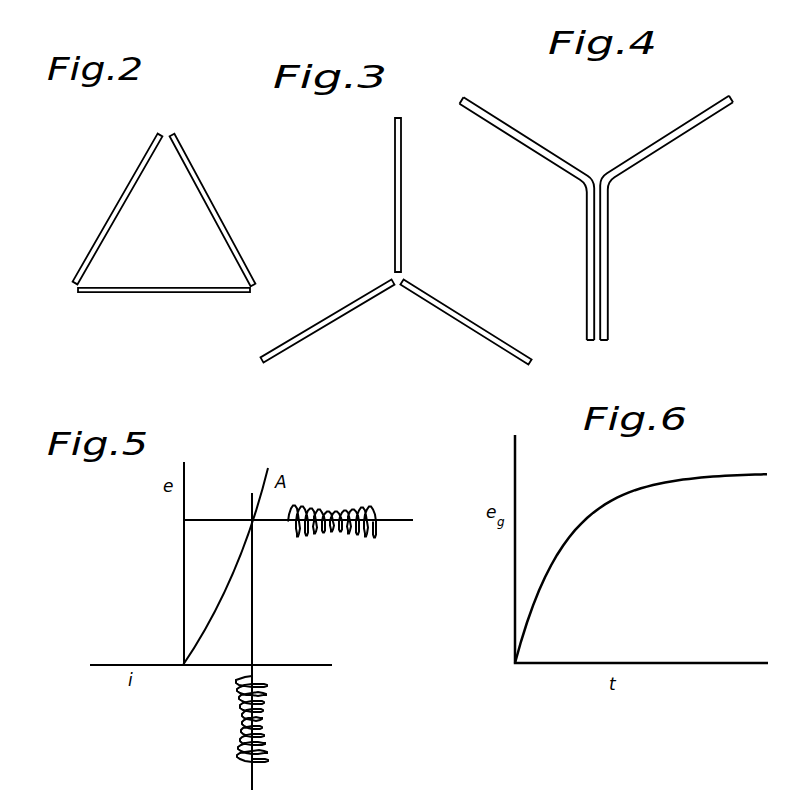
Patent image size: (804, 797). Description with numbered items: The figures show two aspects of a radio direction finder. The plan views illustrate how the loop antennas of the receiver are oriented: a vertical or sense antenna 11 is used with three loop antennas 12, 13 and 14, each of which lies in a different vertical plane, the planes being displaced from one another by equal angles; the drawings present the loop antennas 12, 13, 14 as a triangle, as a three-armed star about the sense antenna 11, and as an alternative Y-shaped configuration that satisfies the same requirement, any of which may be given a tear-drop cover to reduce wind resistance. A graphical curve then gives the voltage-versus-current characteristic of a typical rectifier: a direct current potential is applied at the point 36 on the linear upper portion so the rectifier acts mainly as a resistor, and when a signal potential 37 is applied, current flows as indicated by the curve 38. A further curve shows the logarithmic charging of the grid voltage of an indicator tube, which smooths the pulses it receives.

In FIG. 3, the sense antenna 11 is at (402, 209).
In FIG. 4, the sense antenna 11 is at (518, 137).
In FIG. 2, the loop antenna 12 is at (128, 183).
In FIG. 3, the loop antenna 12 is at (348, 306).
In FIG. 4, the loop antenna 12 is at (683, 143).
In FIG. 2, the loop antenna 13 is at (213, 196).
In FIG. 3, the loop antenna 13 is at (470, 319).
In FIG. 4, the loop antenna 13 is at (600, 278).
In FIG. 2, the loop antenna 14 is at (178, 293).
In FIG. 5, the operating point 36 is at (398, 522).
In FIG. 5, the signal potential 37 is at (247, 732).
In FIG. 5, the current curve 38 is at (350, 507).